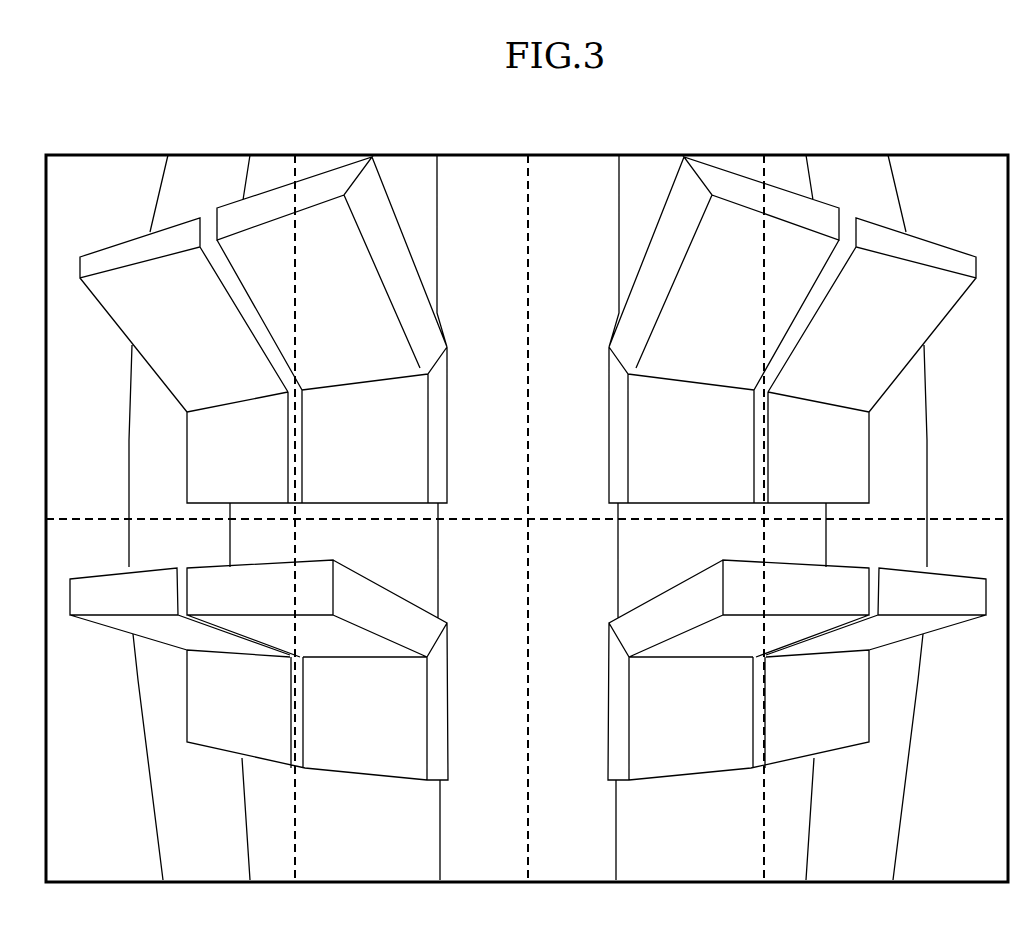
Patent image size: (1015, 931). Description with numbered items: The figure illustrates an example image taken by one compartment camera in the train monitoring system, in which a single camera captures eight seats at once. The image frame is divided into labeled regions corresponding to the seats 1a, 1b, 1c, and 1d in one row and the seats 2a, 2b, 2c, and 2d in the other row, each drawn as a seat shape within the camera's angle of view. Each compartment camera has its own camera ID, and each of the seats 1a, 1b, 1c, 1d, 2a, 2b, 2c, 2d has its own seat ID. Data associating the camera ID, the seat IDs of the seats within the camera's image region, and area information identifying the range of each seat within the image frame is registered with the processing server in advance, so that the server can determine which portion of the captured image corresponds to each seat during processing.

The seat 1a is at (172, 517).
The seat 1b is at (317, 329).
The seat 1c is at (703, 329).
The seat 1d is at (872, 517).
The seat 2a is at (173, 691).
The seat 2b is at (317, 691).
The seat 2c is at (703, 691).
The seat 2d is at (876, 691).